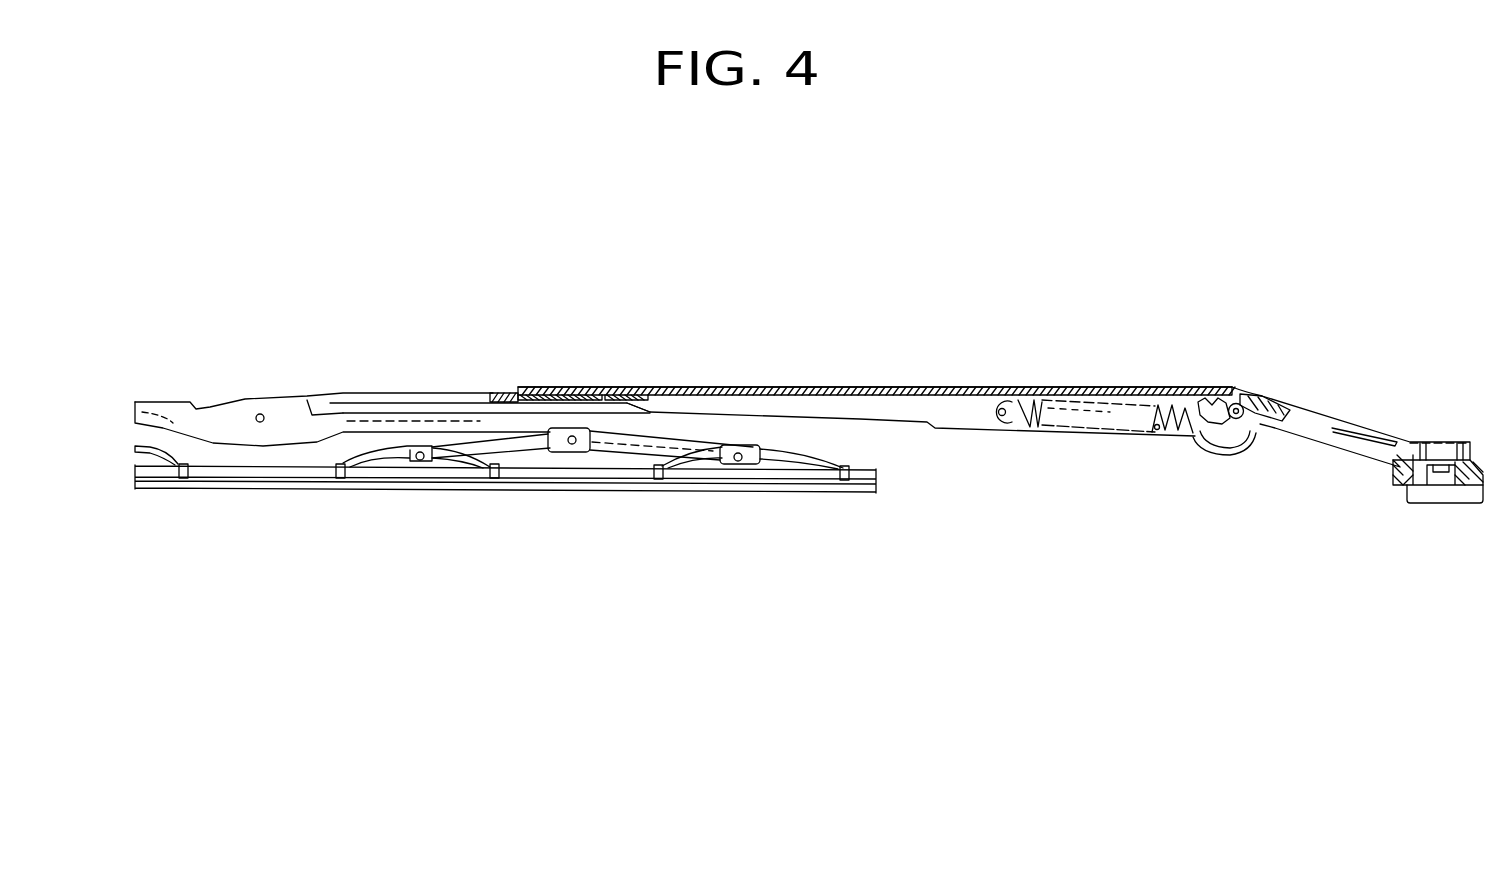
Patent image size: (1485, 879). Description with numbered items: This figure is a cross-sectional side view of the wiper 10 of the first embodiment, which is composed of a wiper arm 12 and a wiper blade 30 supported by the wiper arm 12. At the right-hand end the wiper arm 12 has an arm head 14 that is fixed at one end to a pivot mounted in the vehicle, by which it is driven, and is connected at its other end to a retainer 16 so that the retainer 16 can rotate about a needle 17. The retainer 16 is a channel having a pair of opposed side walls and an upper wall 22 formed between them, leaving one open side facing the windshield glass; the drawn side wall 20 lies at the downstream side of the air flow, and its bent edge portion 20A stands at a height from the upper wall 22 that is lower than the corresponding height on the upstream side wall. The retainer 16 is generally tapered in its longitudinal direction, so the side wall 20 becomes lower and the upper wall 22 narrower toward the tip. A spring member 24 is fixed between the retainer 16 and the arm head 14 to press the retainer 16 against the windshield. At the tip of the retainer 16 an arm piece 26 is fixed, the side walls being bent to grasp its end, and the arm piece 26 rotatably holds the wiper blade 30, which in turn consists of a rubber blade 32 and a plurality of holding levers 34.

The wiper 10 is at (725, 264).
The wiper arm 12 is at (1162, 290).
The arm head 14 is at (1290, 412).
The retainer 16 is at (948, 384).
The needle 17 is at (1235, 420).
The side wall 20 is at (965, 418).
The edge portion 20A is at (812, 415).
The upper wall 22 is at (795, 388).
The spring member 24 is at (1005, 435).
The arm piece 26 is at (493, 391).
The wiper blade 30 is at (455, 565).
The rubber blade 32 is at (450, 490).
The holding levers 34 is at (303, 440).